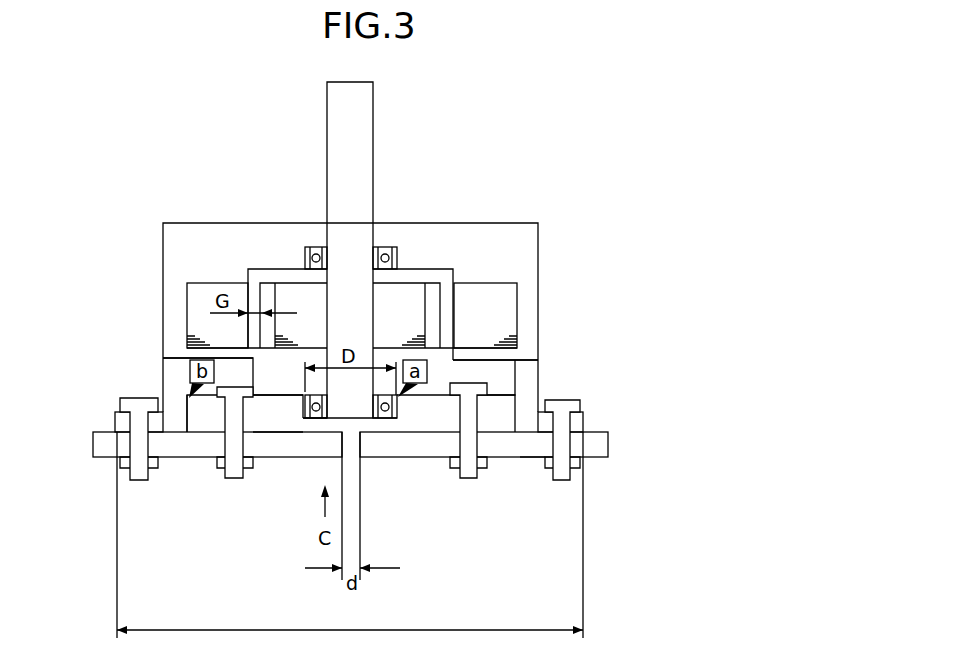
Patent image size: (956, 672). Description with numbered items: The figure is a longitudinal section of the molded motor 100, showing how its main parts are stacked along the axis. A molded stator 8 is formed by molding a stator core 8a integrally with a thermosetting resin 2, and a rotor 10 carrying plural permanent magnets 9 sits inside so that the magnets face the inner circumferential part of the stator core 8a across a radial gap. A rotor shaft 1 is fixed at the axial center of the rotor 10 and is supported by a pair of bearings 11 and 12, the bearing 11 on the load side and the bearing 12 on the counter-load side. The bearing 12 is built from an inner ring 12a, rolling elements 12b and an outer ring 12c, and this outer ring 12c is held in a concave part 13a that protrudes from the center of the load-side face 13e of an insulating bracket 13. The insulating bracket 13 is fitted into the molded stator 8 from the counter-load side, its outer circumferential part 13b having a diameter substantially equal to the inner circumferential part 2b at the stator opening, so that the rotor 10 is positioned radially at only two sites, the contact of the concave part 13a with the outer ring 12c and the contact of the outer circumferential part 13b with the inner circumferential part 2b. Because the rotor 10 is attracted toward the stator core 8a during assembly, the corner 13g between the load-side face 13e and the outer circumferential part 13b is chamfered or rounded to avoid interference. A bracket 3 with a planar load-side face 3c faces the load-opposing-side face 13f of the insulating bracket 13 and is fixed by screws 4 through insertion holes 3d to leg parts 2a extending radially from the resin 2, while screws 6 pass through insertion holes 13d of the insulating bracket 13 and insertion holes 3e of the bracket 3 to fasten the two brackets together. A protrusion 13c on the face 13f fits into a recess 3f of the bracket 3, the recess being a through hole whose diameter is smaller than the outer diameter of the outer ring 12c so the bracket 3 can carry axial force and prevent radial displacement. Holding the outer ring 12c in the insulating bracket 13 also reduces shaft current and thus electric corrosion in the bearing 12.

The rotor shaft 1 is at (375, 150).
The thermosetting resin 2 is at (527, 246).
The leg part 2a is at (583, 426).
The inner circumferential part 2b is at (492, 386).
The bracket 3 is at (606, 447).
The load-side face 3c is at (528, 455).
The insertion hole 3d is at (582, 450).
The insertion hole 3e is at (478, 452).
The recess 3f is at (336, 447).
The screw 4 is at (578, 408).
The screw 6 is at (527, 360).
The molded stator 8 is at (527, 277).
The stator core 8a is at (515, 307).
The permanent magnet 9 is at (432, 292).
The rotor 10 is at (288, 297).
The bearing 11 is at (405, 247).
The bearing 12 is at (470, 488).
The inner ring 12a is at (378, 418).
The rolling element 12b is at (387, 418).
The outer ring 12c is at (400, 415).
The insulating bracket 13 is at (197, 420).
The concave part 13a is at (303, 408).
The outer circumferential part 13b is at (187, 402).
The protrusion 13c is at (343, 440).
The insertion hole 13d is at (212, 413).
The load-side face 13e is at (178, 358).
The load-opposing-side face 13f is at (262, 433).
The corner 13g is at (505, 397).
The molded motor 100 is at (518, 130).